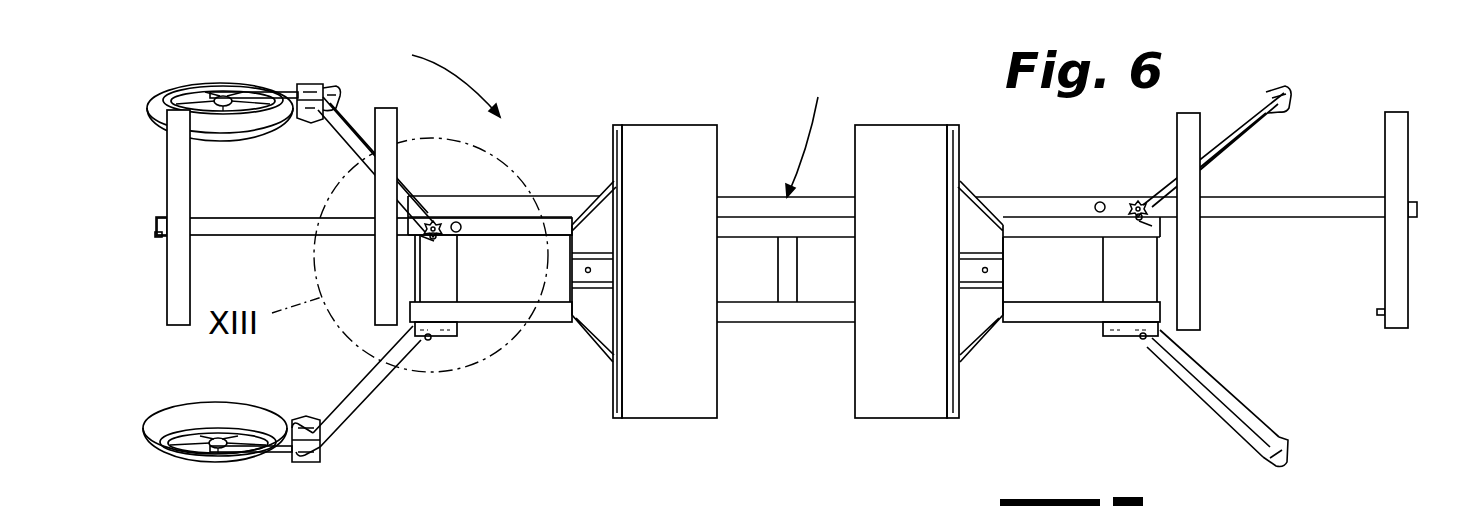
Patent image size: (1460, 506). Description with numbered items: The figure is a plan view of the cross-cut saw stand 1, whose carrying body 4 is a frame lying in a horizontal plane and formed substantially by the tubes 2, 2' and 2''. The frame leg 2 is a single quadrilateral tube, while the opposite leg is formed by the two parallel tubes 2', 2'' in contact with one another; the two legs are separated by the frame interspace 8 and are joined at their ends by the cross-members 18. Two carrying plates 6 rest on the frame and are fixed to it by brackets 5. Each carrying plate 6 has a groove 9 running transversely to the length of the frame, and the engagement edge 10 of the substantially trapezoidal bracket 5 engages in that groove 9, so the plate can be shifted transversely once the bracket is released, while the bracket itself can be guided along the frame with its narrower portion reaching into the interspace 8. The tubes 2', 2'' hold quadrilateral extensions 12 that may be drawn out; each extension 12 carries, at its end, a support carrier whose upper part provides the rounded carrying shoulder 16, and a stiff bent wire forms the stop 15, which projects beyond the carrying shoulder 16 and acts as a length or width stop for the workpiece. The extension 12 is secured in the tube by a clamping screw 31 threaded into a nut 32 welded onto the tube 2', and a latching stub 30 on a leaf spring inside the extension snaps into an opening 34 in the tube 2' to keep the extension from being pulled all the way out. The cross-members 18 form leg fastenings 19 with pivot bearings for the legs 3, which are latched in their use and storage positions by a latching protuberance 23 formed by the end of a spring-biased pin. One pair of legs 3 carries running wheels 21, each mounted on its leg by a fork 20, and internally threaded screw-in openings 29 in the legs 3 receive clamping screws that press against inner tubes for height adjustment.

The cross-cut saw stand 1 is at (440, 274).
The frame leg 2 is at (786, 293).
The frame leg tube 2' is at (504, 169).
The frame leg tube 2'' is at (1192, 168).
The leg 3 is at (348, 153).
The carrying body 4 is at (809, 131).
The bracket 5 is at (600, 220).
The carrying plate 6 is at (668, 147).
The frame interspace 8 is at (743, 257).
The groove 9 is at (620, 125).
The engagement edge 10 is at (627, 217).
The extension 12 is at (235, 230).
The stop 15 is at (158, 236).
The carrying shoulder 16 is at (175, 175).
The cross-member 18 is at (445, 282).
The leg fastening 19 is at (445, 340).
The fork 20 is at (243, 88).
The running wheel 21 is at (153, 112).
The latching protuberance 23 is at (428, 343).
The screw-in opening 29 is at (335, 108).
The latching stub 30 is at (455, 222).
The clamping screw 31 is at (423, 243).
The nut 32 is at (428, 233).
The opening 34 is at (460, 223).